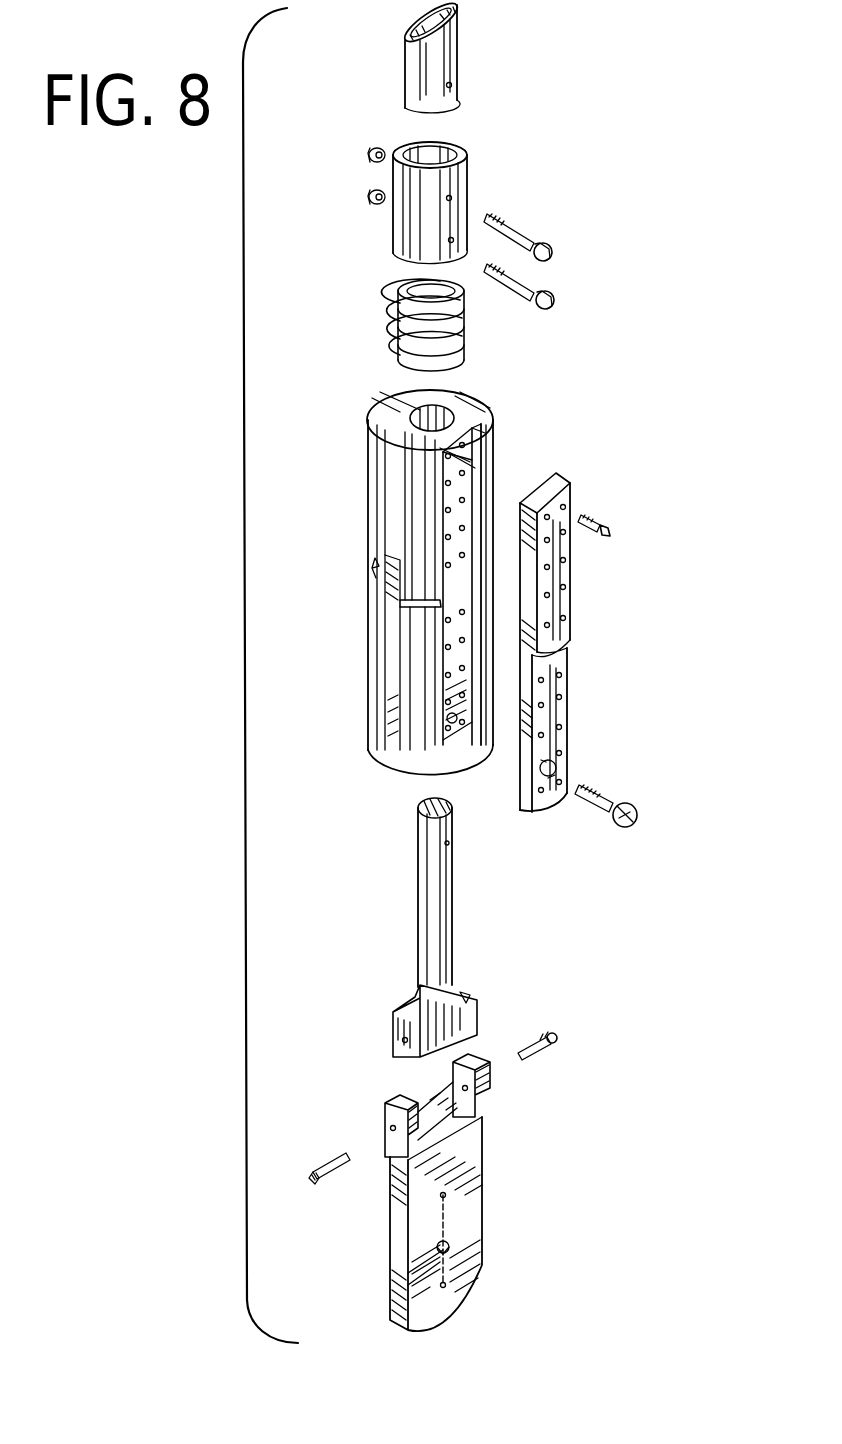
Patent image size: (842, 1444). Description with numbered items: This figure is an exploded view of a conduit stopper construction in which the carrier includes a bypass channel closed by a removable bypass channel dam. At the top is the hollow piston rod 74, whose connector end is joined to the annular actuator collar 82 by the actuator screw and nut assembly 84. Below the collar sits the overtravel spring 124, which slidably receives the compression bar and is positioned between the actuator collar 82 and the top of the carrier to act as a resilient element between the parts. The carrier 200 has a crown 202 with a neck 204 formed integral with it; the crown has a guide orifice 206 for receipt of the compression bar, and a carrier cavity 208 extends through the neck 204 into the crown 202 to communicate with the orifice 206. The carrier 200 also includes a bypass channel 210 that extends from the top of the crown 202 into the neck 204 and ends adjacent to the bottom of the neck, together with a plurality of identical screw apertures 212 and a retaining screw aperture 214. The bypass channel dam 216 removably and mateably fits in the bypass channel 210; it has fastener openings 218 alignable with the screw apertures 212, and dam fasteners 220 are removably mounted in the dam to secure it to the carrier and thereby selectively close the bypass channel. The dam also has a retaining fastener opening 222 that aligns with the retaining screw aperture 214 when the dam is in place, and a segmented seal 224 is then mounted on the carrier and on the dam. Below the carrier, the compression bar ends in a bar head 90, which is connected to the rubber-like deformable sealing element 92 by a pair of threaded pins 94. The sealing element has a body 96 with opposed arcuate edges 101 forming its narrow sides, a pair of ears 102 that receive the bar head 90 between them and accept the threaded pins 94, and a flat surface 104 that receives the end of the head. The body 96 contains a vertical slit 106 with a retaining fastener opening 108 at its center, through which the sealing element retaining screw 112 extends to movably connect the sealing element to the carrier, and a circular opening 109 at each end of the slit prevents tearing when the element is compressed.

The hollow piston rod 74 is at (443, 58).
The annular actuator collar 82 is at (462, 183).
The actuator screw and nut assembly 84 is at (560, 258).
The overtravel spring 124 is at (398, 322).
The carrier 200 is at (478, 395).
The crown 202 is at (388, 455).
The neck 204 is at (378, 650).
The guide orifice 206 is at (418, 410).
The carrier cavity 208 is at (395, 705).
The bypass channel 210 is at (482, 460).
The screw apertures 212 is at (462, 510).
The retaining screw aperture 214 is at (450, 724).
The bypass channel dam 216 is at (566, 640).
The fastener openings 218 is at (565, 587).
The dam fasteners 220 is at (600, 522).
The retaining fastener opening 222 is at (560, 766).
The segmented seal 224 is at (375, 580).
The sealing element retaining screw 112 is at (637, 822).
The bar head 90 is at (470, 1005).
The threaded pins 94 is at (556, 1041).
The sealing element 92 is at (488, 1153).
The body 96 is at (485, 1250).
The arcuate edges 101 is at (400, 1218).
The ears 102 is at (393, 1100).
The flat surface 104 is at (482, 1118).
The vertical slit 106 is at (450, 1268).
The retaining fastener opening 108 is at (438, 1250).
The circular opening 109 is at (446, 1195).